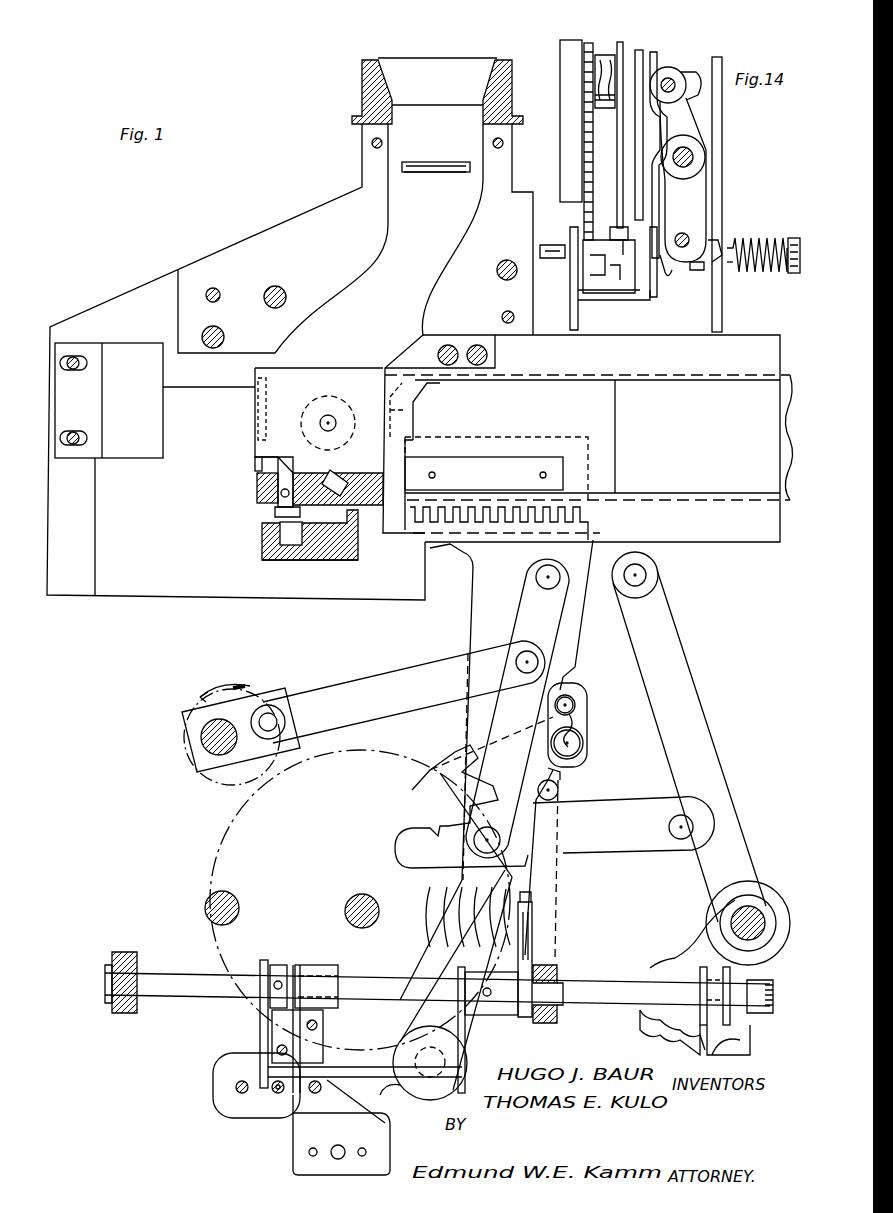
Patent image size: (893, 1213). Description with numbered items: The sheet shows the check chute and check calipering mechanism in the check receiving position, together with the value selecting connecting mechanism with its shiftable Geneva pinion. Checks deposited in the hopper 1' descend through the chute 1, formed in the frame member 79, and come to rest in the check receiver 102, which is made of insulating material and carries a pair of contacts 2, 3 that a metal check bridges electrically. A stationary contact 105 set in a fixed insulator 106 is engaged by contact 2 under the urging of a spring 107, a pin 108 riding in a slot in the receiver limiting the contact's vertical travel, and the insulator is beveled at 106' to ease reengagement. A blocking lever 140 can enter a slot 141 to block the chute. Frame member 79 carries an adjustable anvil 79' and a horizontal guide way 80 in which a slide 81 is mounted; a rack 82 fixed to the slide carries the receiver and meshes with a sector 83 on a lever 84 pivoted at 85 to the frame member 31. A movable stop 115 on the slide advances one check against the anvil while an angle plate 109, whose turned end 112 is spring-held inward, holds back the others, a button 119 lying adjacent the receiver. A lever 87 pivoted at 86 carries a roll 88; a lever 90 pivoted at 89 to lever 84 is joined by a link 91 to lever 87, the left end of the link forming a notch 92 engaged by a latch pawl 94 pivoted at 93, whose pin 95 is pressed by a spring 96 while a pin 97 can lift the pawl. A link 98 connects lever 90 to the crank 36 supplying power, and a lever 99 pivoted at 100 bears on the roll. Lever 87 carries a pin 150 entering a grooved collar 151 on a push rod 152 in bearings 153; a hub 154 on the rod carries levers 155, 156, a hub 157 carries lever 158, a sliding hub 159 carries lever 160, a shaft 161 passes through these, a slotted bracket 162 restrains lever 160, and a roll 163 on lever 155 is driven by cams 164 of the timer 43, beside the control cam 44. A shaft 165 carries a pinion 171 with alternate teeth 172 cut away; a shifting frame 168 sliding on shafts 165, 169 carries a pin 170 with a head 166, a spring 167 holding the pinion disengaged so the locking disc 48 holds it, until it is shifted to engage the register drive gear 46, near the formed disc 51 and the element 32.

In FIG. 1, the check receiving chute 1 is at (290, 362).
In FIG. 1, the hopper 1' is at (437, 91).
In FIG. 1, the contact 2 is at (292, 460).
In FIG. 1, the contact 3 is at (330, 470).
In FIG. 14, the frame member 31 is at (720, 314).
In FIG. 1, the shaft 32 is at (205, 740).
In FIG. 1, the crank 36 is at (240, 700).
In FIG. 1, the Geneva gear actuator cam or timer 43 is at (208, 848).
In FIG. 14, the Geneva gear actuator cam or timer 43 is at (646, 60).
In FIG. 14, the Geneva gear control cam 44 is at (640, 46).
In FIG. 14, the register drive gear 46 is at (608, 54).
In FIG. 14, the locking disc 48 is at (590, 40).
In FIG. 14, the formed disc 51 is at (574, 38).
In FIG. 1, the frame member 79 is at (170, 503).
In FIG. 1, the adjustable anvil 79' is at (109, 400).
In FIG. 1, the horizontal guide way 80 is at (672, 380).
In FIG. 1, the slide 81 is at (319, 412).
In FIG. 1, the rack 82 is at (525, 442).
In FIG. 1, the sector 83 is at (592, 534).
In FIG. 1, the lever 84 is at (578, 630).
In FIG. 1, the pivot 85 is at (436, 1065).
In FIG. 1, the pivot 86 is at (647, 572).
In FIG. 1, the lever 87 is at (664, 620).
In FIG. 1, the roll 88 is at (748, 1046).
In FIG. 1, the pivot 89 is at (540, 573).
In FIG. 1, the lever 90 is at (528, 608).
In FIG. 1, the link 91 is at (588, 818).
In FIG. 1, the notch 92 is at (470, 838).
In FIG. 1, the pivot 93 is at (583, 745).
In FIG. 1, the latch pawl 94 is at (458, 757).
In FIG. 1, the pin 95 is at (574, 700).
In FIG. 1, the spring 96 is at (578, 716).
In FIG. 1, the pin 97 is at (558, 788).
In FIG. 1, the link 98 is at (365, 670).
In FIG. 1, the lever 99 is at (668, 974).
In FIG. 1, the pivot 100 is at (752, 916).
In FIG. 1, the check receiver 102 is at (256, 480).
In FIG. 1, the stationary contact 105 is at (260, 550).
In FIG. 1, the fixed insulator 106 is at (313, 570).
In FIG. 1, the bevel 106' is at (250, 533).
In FIG. 1, the spring 107 is at (255, 508).
In FIG. 1, the pin 108 is at (270, 493).
In FIG. 1, the angle plate 109 is at (270, 460).
In FIG. 1, the turned end 112 is at (254, 441).
In FIG. 1, the movable stop 115 is at (414, 408).
In FIG. 1, the button 119 is at (322, 404).
In FIG. 1, the blocking lever 140 is at (418, 164).
In FIG. 1, the slot 141 is at (406, 170).
In FIG. 1, the pin 150 is at (697, 1010).
In FIG. 1, the grooved collar 151 is at (698, 980).
In FIG. 1, the push rod 152 is at (592, 1000).
In FIG. 14, the push rod 152 is at (694, 156).
In FIG. 1, the bearing 153 is at (118, 1012).
In FIG. 1, the hub 154 is at (488, 966).
In FIG. 1, the lever 155 is at (535, 955).
In FIG. 14, the lever 155 is at (703, 73).
In FIG. 1, the lever 156 is at (468, 1046).
In FIG. 1, the hub 157 is at (274, 968).
In FIG. 1, the lever 158 is at (262, 1036).
In FIG. 14, the lever 158 is at (700, 204).
In FIG. 1, the hub 159 is at (320, 970).
In FIG. 1, the lever 160 is at (290, 1118).
In FIG. 14, the lever 160 is at (666, 280).
In FIG. 1, the shaft 161 is at (400, 1078).
In FIG. 14, the shaft 161 is at (690, 236).
In FIG. 1, the slotted bracket 162 is at (322, 1050).
In FIG. 1, the roll 163 is at (536, 908).
In FIG. 14, the roll 163 is at (672, 70).
In FIG. 14, the cam 164 is at (648, 126).
In FIG. 1, the shaft 165 is at (316, 1094).
In FIG. 14, the shaft 165 is at (560, 270).
In FIG. 14, the head 166 is at (796, 236).
In FIG. 14, the spring 167 is at (754, 272).
In FIG. 1, the shifting frame 168 is at (400, 1108).
In FIG. 14, the shifting frame 168 is at (580, 310).
In FIG. 1, the shaft 169 is at (236, 1082).
In FIG. 1, the pin 170 is at (274, 1092).
In FIG. 14, the pin 170 is at (706, 248).
In FIG. 14, the pinion 171 is at (653, 298).
In FIG. 14, the alternate teeth 172 is at (609, 267).